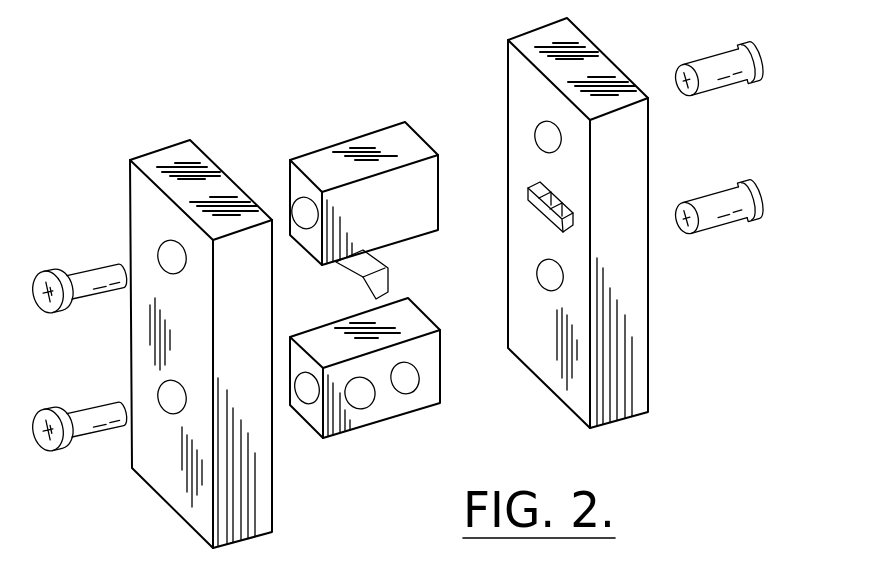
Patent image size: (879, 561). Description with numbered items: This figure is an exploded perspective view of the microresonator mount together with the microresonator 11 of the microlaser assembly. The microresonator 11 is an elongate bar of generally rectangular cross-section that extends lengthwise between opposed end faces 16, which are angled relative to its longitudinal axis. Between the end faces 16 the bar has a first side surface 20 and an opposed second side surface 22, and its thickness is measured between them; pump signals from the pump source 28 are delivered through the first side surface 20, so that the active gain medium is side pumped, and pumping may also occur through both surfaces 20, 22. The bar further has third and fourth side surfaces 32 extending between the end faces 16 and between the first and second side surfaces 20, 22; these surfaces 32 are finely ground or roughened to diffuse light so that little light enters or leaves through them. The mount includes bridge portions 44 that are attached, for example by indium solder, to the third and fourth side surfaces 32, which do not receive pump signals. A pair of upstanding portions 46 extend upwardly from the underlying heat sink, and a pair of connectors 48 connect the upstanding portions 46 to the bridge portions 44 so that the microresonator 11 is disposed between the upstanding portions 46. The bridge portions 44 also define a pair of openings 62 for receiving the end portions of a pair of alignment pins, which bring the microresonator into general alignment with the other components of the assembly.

The microresonator 11 is at (396, 247).
The opposed end faces 16 is at (396, 247).
The first side surface 20 is at (386, 247).
The second side surface 22 is at (355, 247).
The pump source 28 is at (567, 195).
The third and fourth side surfaces 32 is at (366, 253).
The bridge portions 44 is at (374, 286).
The upstanding portions 46 is at (267, 492).
The connectors 48 is at (97, 400).
The openings 62 is at (405, 378).